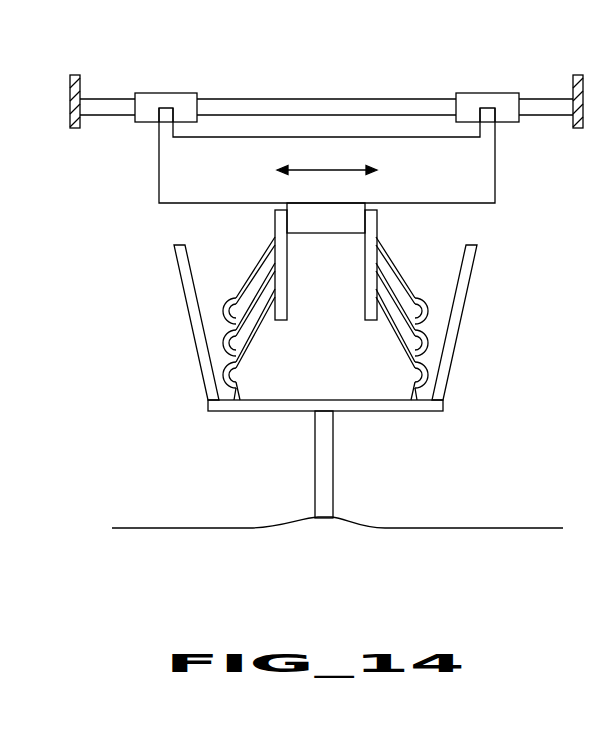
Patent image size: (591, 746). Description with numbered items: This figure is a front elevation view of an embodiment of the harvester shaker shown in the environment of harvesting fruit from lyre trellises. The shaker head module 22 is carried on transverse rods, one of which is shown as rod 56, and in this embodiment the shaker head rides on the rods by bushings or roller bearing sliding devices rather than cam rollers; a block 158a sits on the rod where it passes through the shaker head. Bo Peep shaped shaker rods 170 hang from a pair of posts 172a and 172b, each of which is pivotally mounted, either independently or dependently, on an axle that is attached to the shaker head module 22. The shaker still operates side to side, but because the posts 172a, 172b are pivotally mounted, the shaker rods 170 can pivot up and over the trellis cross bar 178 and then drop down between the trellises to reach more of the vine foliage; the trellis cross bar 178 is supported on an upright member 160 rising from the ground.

The transverse rod 56 is at (278, 98).
The rail mounting block 158a is at (151, 93).
The shaker head module 22 is at (329, 133).
The post 172a is at (278, 223).
The post 172b is at (377, 223).
The Bo Peep rod 170 is at (255, 347).
The trellis cross bar 178 is at (263, 412).
The support post 160 is at (335, 473).